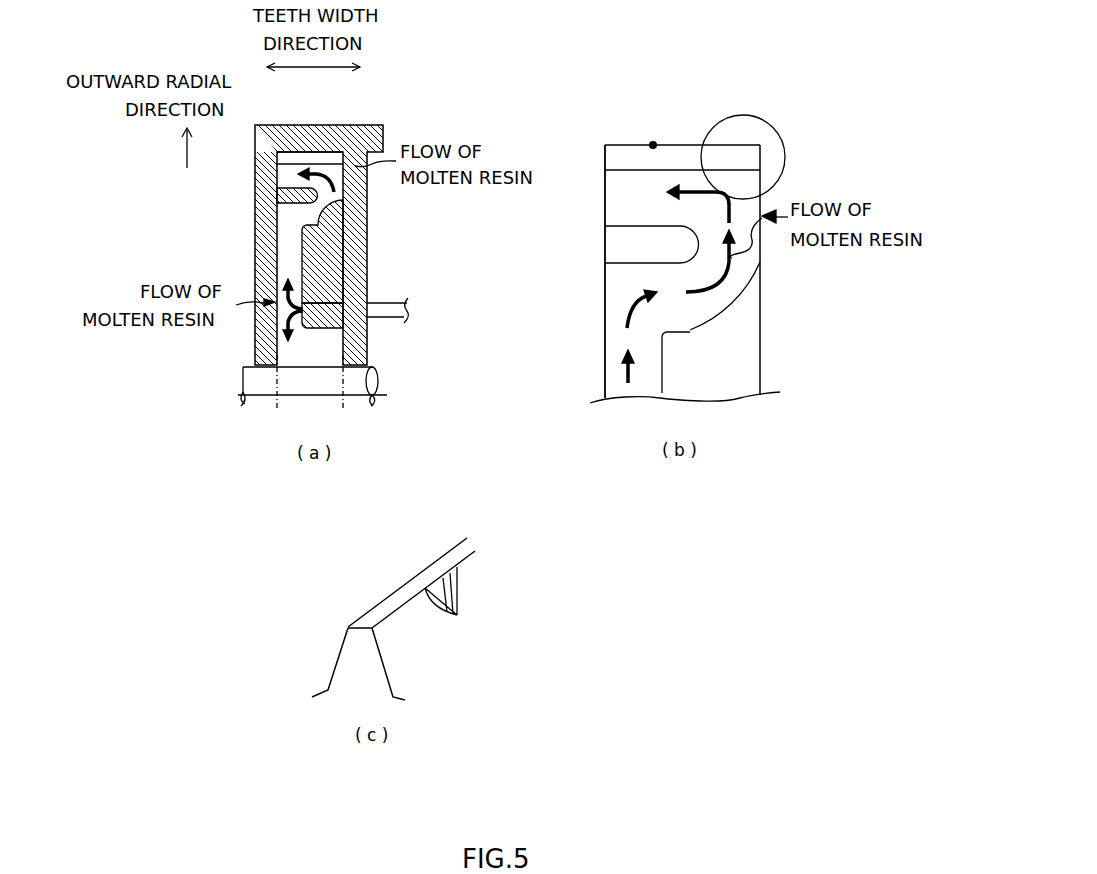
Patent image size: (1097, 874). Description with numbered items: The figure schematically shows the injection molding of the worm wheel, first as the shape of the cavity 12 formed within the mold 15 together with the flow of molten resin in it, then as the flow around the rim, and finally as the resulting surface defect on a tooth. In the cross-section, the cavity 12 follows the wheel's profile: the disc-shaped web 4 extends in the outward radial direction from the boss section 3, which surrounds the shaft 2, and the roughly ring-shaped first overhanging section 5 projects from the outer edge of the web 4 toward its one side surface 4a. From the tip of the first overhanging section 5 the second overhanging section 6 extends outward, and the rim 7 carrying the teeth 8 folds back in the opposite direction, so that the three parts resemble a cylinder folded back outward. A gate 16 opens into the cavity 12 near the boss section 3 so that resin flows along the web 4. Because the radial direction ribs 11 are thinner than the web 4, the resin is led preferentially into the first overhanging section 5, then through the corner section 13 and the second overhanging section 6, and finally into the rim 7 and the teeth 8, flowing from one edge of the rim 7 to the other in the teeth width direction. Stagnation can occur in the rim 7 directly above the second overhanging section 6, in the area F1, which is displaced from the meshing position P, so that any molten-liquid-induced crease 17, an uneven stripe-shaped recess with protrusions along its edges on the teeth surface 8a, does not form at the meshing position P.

The shaft 2 is at (318, 368).
The boss section 3 is at (347, 342).
The web 4 is at (260, 250).
The one side surface 4a is at (665, 365).
The first overhanging section 5 is at (320, 252).
The second overhanging section 6 is at (340, 199).
The rim 7 is at (280, 168).
The teeth 8 is at (292, 126).
The teeth surface 8a is at (470, 572).
The radial direction ribs 11 is at (258, 195).
The cavity 12 is at (284, 222).
The corner section 13 is at (351, 216).
The mold 15 is at (324, 123).
The gate 16 is at (388, 300).
The molten-liquid-induced crease 17 is at (440, 613).
The meshing position P is at (653, 143).
The stagnation area F1 is at (772, 116).